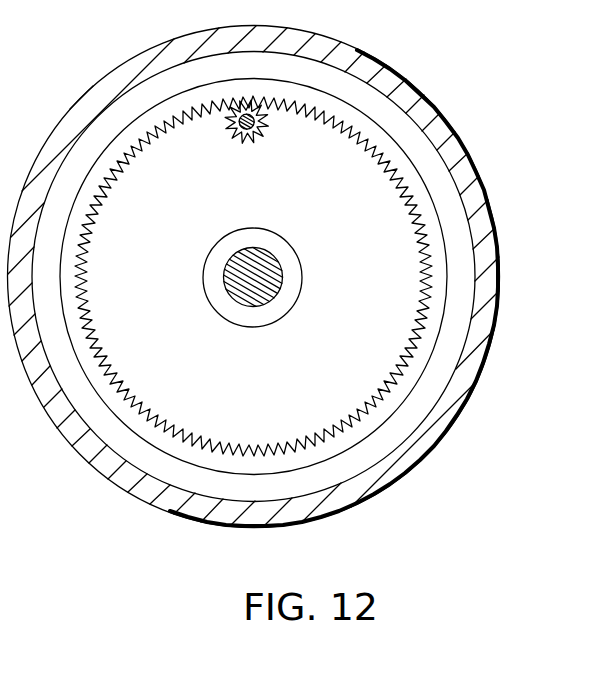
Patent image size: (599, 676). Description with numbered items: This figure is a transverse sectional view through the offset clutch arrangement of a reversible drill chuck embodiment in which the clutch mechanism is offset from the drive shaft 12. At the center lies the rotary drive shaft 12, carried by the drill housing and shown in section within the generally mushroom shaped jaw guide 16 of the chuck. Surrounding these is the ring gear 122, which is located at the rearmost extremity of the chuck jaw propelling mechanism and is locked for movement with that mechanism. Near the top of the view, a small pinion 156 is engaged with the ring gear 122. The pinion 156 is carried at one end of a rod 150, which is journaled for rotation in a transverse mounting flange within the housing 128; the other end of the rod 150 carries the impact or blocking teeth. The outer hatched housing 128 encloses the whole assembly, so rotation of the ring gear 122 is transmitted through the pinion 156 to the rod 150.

The housing 128 is at (392, 76).
The ring gear 122 is at (384, 160).
The pinion 156 is at (262, 119).
The rod 150 is at (252, 127).
The jaw guide 16 is at (288, 270).
The drive shaft 12 is at (272, 292).